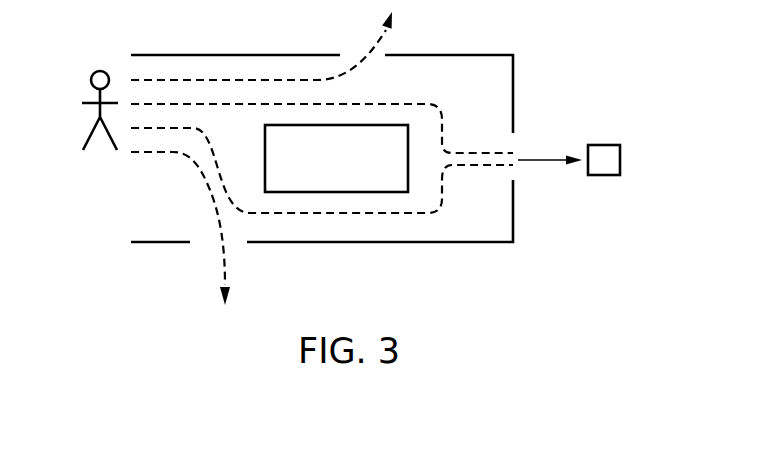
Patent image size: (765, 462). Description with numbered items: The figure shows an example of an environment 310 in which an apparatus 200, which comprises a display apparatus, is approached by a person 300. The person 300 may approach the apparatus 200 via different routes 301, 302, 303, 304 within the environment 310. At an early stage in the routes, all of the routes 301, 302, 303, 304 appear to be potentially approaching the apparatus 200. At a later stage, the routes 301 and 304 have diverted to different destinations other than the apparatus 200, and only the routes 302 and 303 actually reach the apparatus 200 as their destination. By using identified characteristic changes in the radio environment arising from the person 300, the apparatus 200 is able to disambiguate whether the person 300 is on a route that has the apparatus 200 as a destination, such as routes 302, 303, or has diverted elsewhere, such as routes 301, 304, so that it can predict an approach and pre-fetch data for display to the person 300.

The apparatus 200 is at (604, 144).
The person 300 is at (100, 70).
The route 301 is at (220, 272).
The route 302 is at (357, 214).
The route 303 is at (433, 107).
The route 304 is at (378, 38).
The environment 310 is at (574, 58).